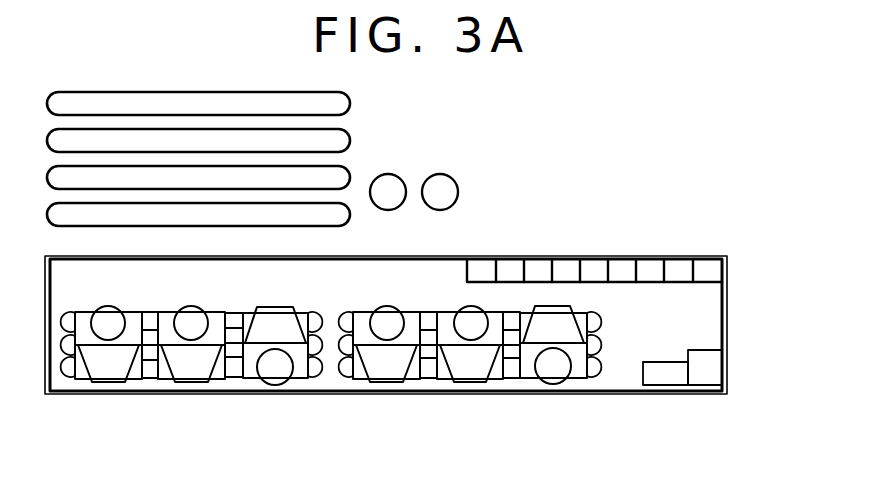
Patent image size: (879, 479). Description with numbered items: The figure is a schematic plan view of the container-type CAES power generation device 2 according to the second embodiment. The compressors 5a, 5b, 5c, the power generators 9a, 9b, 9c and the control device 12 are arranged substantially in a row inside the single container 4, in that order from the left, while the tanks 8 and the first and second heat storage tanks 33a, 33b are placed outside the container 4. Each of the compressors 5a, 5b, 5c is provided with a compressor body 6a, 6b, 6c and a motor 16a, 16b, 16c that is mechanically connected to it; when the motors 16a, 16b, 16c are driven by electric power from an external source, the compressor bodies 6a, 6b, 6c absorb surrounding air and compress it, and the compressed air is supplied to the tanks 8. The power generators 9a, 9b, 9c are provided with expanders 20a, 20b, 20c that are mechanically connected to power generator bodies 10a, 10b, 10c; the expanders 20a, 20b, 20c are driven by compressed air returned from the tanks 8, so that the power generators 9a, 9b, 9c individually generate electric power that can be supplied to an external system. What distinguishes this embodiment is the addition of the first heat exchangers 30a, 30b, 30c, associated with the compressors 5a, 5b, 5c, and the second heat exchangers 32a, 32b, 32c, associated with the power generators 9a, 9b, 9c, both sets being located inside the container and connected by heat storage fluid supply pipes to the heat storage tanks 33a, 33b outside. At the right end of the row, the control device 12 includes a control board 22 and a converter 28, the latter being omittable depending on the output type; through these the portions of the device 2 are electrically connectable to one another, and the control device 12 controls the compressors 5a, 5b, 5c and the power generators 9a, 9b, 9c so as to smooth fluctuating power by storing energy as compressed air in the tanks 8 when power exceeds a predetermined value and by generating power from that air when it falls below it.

The container-type CAES power generation device 2 is at (535, 212).
The container 4 is at (652, 256).
The compressor 5a is at (90, 344).
The compressor 5b is at (205, 331).
The compressor 5c is at (291, 331).
The compressor body 6a is at (115, 382).
The compressor body 6b is at (202, 382).
The compressor body 6c is at (278, 306).
The tanks 8 is at (350, 101).
The power generator 9a is at (379, 328).
The power generator 9b is at (458, 328).
The power generator 9c is at (589, 377).
The power generator body 10a is at (381, 305).
The power generator body 10b is at (451, 305).
The power generator body 10c is at (558, 385).
The control device 12 is at (731, 399).
The motor 16a is at (108, 305).
The motor 16b is at (192, 305).
The motor 16c is at (276, 386).
The expander 20a is at (382, 383).
The expander 20b is at (475, 383).
The expander 20c is at (548, 306).
The control board 22 is at (715, 365).
The converter 28 is at (708, 268).
The first heat exchanger 30a is at (76, 380).
The first heat exchanger 30b is at (157, 381).
The first heat exchanger 30c is at (243, 381).
The second heat exchanger 32a is at (417, 382).
The second heat exchanger 32b is at (503, 382).
The second heat exchanger 32c is at (588, 379).
The first heat storage tank 33a is at (393, 175).
The second heat storage tank 33b is at (446, 175).